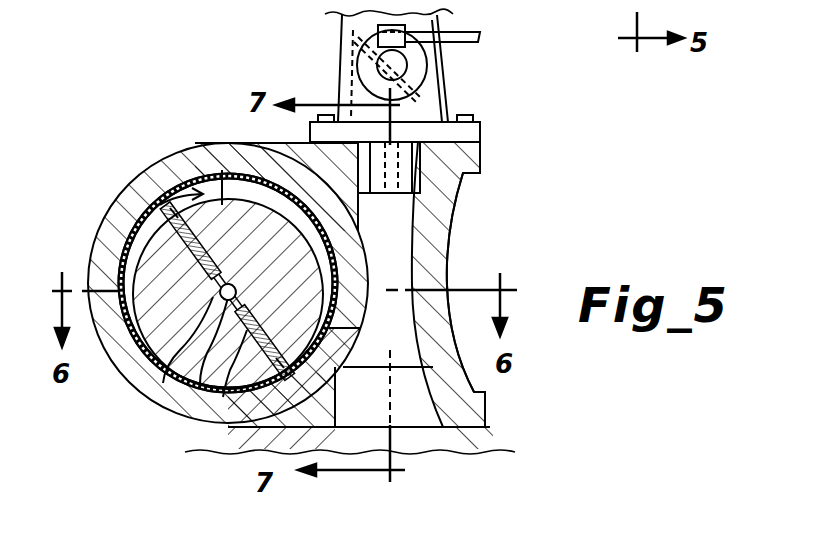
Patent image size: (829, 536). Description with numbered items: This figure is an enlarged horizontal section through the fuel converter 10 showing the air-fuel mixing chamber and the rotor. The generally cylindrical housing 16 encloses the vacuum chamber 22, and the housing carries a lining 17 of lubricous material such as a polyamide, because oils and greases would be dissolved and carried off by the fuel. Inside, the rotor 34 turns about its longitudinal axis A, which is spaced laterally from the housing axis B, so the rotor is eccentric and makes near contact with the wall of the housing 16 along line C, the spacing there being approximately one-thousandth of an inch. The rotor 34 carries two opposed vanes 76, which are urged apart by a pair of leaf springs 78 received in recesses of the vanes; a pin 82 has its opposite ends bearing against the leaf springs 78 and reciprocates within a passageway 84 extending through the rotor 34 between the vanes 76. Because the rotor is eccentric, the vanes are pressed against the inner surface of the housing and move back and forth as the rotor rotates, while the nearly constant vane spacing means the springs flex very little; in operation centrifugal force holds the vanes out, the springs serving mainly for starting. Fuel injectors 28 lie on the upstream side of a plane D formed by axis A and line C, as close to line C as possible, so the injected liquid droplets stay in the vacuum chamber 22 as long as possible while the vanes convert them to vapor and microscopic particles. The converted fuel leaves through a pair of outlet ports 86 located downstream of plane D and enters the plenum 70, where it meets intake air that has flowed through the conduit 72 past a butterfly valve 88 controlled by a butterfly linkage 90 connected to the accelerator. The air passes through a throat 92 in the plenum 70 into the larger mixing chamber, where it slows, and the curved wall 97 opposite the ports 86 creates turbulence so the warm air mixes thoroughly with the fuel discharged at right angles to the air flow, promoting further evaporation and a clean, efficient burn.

The fuel converter 10 is at (580, 30).
The housing 16 is at (148, 200).
The lining 17 is at (250, 195).
The vacuum chamber 22 is at (105, 345).
The fuel injectors 28 is at (127, 347).
The rotor 34 is at (180, 167).
The plenum 70 is at (447, 240).
The conduit 72 is at (435, 100).
The vanes 76 is at (130, 195).
The leaf springs 78 is at (187, 247).
The pin 82 is at (268, 178).
The passageway 84 is at (163, 382).
The outlet ports 86 is at (333, 365).
The butterfly valve 88 is at (378, 36).
The butterfly linkage 90 is at (480, 40).
The throat 92 is at (432, 155).
The curved wall 97 is at (405, 270).
The longitudinal axis A is at (246, 290).
The housing axis B is at (150, 387).
The line of near contact C is at (227, 410).
The plane D is at (266, 430).